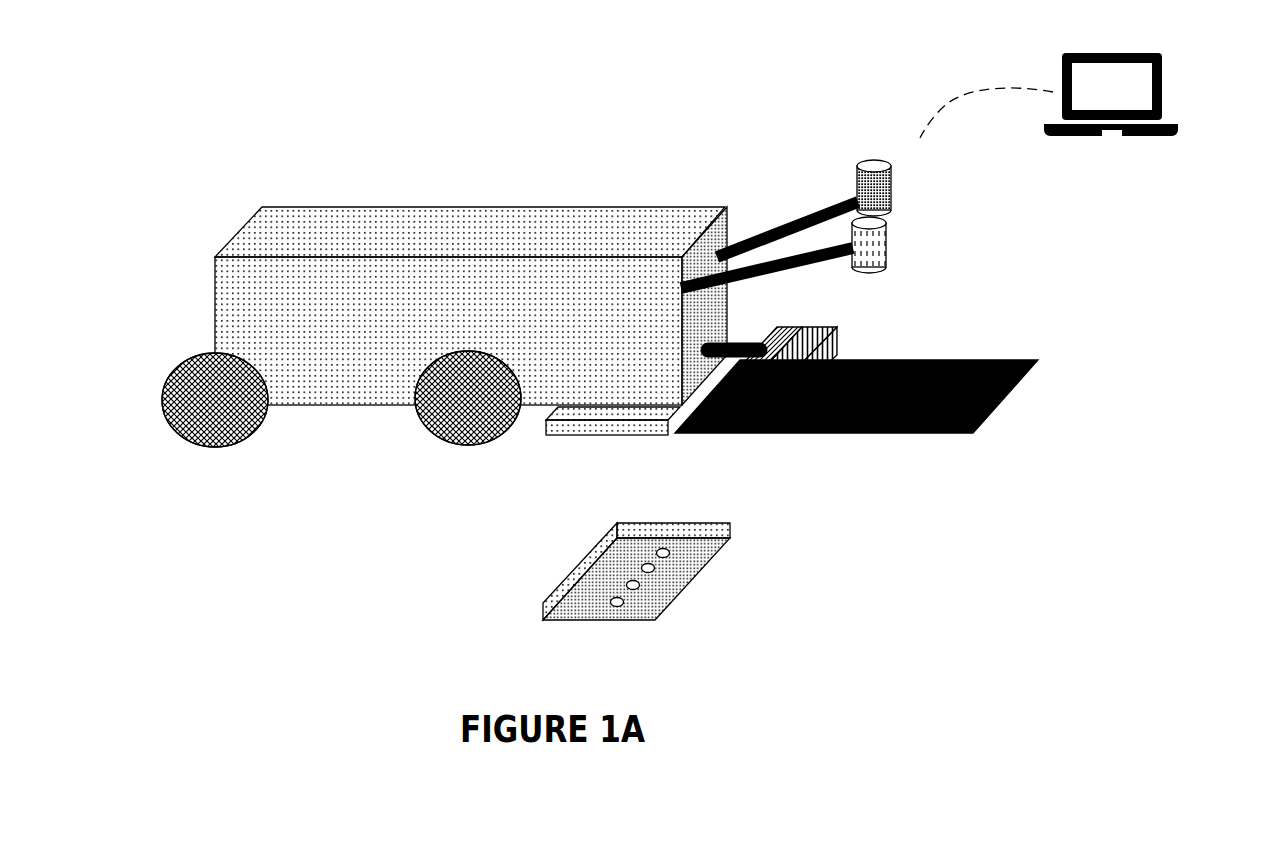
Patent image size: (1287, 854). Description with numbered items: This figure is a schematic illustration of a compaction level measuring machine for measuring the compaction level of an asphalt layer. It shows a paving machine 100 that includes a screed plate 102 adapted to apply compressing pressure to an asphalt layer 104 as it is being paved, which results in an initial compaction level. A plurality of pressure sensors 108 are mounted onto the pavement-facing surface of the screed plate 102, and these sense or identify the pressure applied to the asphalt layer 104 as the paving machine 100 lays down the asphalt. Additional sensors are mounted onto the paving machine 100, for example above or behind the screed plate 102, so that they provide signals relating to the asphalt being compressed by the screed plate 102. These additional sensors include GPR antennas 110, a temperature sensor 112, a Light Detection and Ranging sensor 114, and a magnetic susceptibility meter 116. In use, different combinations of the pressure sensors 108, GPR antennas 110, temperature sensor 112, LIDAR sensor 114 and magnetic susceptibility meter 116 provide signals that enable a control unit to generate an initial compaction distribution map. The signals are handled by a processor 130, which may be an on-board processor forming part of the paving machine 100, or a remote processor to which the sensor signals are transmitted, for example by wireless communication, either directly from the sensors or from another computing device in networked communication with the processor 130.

The paving machine 100 is at (413, 210).
The screed plate 102 is at (660, 522).
The asphalt layer 104 is at (927, 358).
The pressure sensors 108 is at (622, 604).
The GPR antennas 110 is at (756, 432).
The temperature sensor 112 is at (872, 162).
The LIDAR sensor 114 is at (880, 237).
The magnetic susceptibility meter 116 is at (790, 432).
The processor 130 is at (1162, 72).